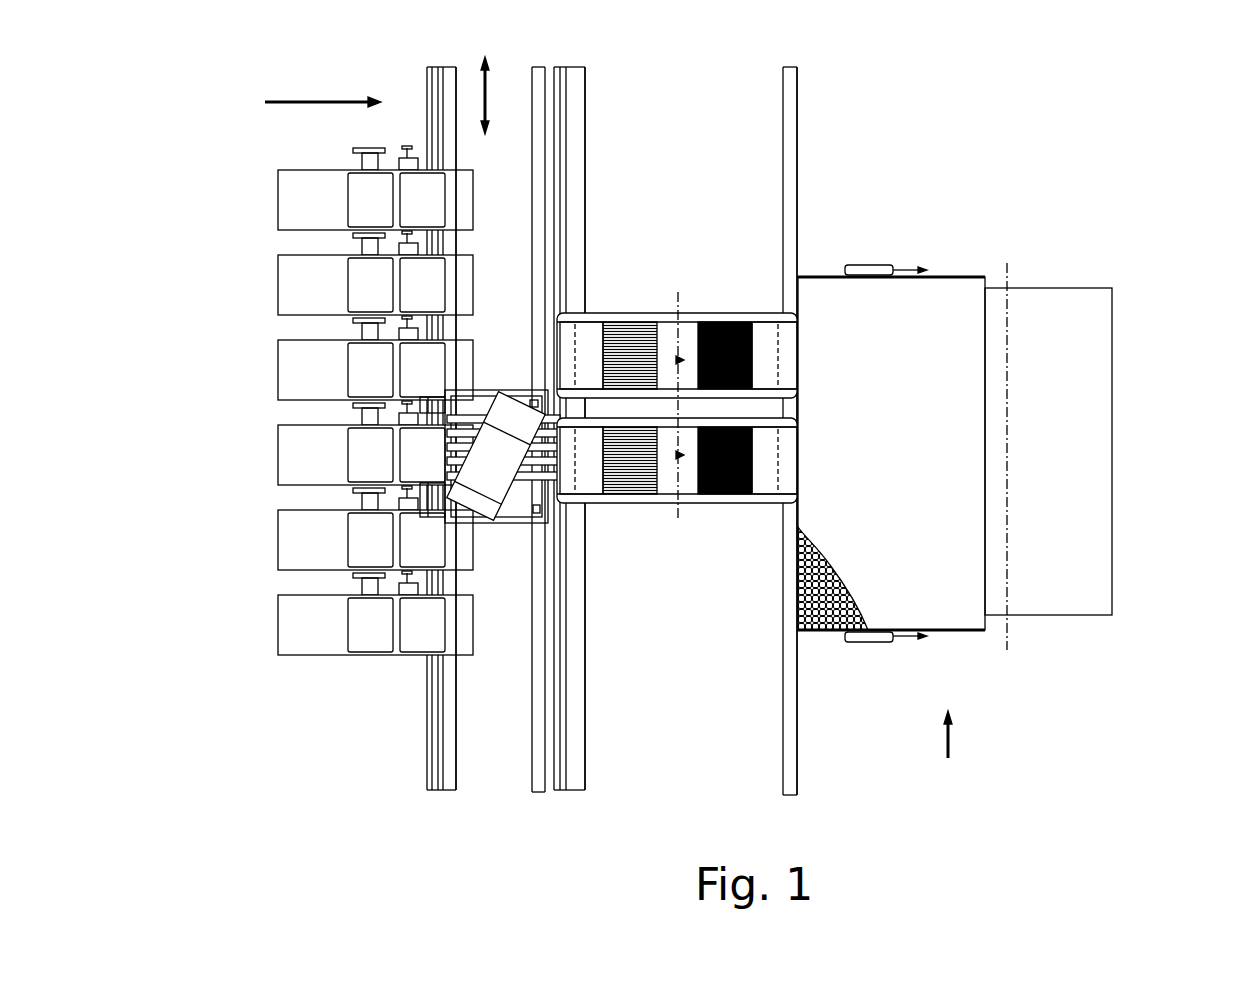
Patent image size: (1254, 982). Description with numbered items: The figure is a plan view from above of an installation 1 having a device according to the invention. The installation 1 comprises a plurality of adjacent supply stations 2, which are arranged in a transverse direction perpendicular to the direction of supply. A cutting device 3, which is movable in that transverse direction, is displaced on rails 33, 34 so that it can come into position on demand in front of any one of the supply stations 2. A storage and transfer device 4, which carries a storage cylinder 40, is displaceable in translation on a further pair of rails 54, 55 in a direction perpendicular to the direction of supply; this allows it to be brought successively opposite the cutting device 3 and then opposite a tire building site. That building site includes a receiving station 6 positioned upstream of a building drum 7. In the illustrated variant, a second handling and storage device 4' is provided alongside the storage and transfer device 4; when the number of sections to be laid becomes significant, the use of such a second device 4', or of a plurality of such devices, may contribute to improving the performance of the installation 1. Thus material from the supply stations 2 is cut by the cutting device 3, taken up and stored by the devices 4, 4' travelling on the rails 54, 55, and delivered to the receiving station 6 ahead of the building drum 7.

The installation 1 is at (713, 414).
The supply stations 2 is at (302, 204).
The cutting device 3 is at (523, 426).
The storage and transfer device 4 is at (677, 359).
The second handling and storage device 4' is at (677, 247).
The receiving station 6 is at (916, 300).
The building drum 7 is at (1097, 428).
The rail 33 is at (450, 698).
The rail 34 is at (532, 710).
The storage cylinder 40 is at (667, 478).
The rail 54 is at (578, 770).
The rail 55 is at (786, 768).